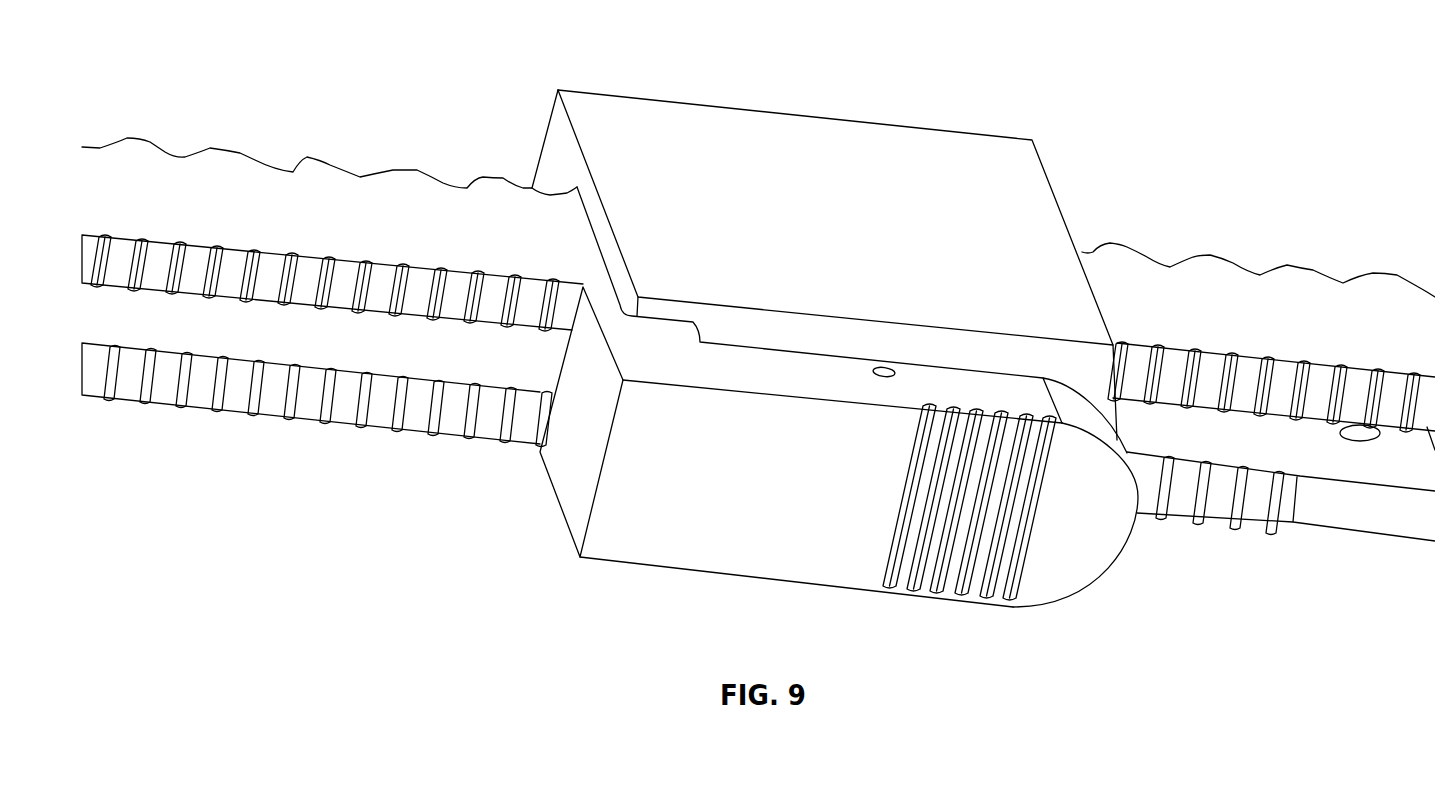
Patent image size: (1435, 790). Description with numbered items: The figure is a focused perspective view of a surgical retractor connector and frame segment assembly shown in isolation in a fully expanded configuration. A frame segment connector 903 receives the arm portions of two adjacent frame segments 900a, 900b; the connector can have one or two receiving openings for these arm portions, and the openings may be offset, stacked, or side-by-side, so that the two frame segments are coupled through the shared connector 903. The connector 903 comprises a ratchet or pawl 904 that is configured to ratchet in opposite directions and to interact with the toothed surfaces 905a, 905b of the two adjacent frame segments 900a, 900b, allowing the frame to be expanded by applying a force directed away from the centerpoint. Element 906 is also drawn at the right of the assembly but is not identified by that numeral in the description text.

The frame segment 900a is at (245, 213).
The frame segment 900b is at (400, 350).
The frame segment connector 903 is at (826, 245).
The ratchet or pawl 904 is at (789, 526).
The toothed surface 905a is at (383, 272).
The toothed surface 905b is at (1208, 522).
The cable sheath 906 is at (1172, 230).